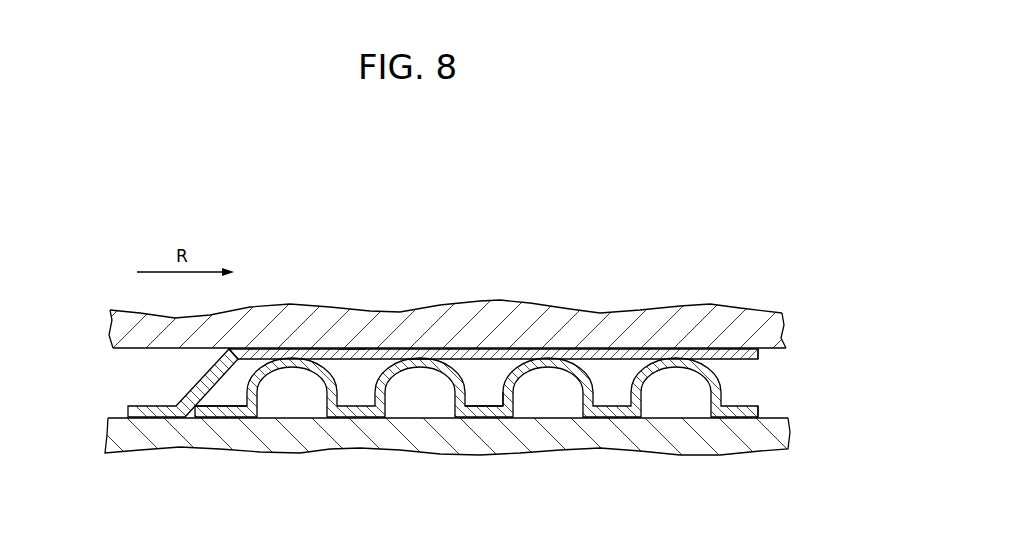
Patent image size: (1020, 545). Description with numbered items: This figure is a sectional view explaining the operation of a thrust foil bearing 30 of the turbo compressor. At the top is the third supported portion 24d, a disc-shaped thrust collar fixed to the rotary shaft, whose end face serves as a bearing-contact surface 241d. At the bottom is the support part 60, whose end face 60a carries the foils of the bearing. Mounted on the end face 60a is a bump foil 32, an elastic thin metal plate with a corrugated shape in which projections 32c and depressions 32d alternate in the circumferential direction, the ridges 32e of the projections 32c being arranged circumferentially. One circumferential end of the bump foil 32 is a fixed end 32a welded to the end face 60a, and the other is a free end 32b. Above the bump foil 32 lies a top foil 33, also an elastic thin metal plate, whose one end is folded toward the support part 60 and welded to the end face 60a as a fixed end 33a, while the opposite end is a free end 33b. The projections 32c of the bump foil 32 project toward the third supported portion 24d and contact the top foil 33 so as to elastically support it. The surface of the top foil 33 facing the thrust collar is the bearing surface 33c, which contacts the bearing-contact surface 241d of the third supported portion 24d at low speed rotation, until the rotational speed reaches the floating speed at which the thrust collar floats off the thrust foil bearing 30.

The thrust foil bearing 30 is at (603, 337).
The third supported portion 24d is at (523, 322).
The bearing-contact surface 241d is at (177, 348).
The top foil 33 is at (737, 362).
The fixed end 33a is at (148, 412).
The free end 33b is at (757, 348).
The bearing surface 33c is at (352, 349).
The bump foil 32 is at (737, 385).
The fixed end 32a is at (758, 419).
The free end 32b is at (208, 412).
The projection 32c is at (538, 378).
The depression 32d is at (480, 417).
The ridge 32e is at (431, 350).
The support part 60 is at (675, 433).
The end face 60a is at (778, 408).